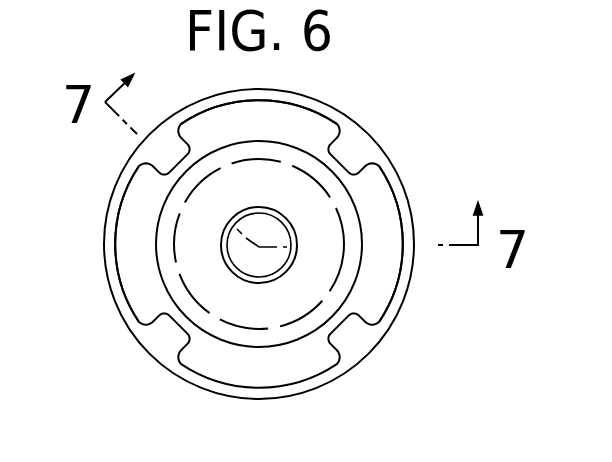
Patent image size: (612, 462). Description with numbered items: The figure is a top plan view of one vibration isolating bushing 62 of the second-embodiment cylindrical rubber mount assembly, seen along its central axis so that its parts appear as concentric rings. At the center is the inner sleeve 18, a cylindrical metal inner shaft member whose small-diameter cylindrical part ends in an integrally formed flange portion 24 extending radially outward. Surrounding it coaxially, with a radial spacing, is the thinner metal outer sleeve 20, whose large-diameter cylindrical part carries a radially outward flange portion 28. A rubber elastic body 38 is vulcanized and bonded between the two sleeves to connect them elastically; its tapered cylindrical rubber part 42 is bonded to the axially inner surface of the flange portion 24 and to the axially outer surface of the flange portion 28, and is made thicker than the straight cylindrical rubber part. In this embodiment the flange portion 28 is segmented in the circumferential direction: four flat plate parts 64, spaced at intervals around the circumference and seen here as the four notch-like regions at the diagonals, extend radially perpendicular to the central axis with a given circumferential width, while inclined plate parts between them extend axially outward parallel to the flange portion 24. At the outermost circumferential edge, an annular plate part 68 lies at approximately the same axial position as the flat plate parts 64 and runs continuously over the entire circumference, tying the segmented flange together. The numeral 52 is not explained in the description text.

The inner sleeve 18 is at (368, 290).
The outer sleeve 20 is at (428, 188).
The flange portion 24 is at (197, 270).
The flange portion 28 is at (440, 113).
The rubber elastic body 38 is at (330, 114).
The tapered cylindrical rubber part 42 is at (130, 237).
The central bore 52 is at (257, 270).
The vibration isolating bushing 62 is at (88, 205).
The flat plate part 64 is at (172, 152).
The annular plate part 68 is at (388, 177).